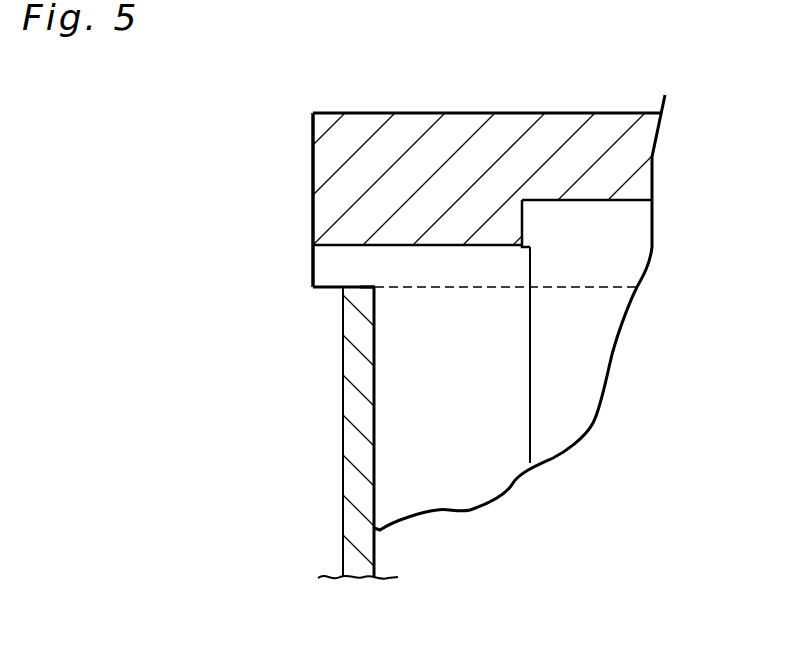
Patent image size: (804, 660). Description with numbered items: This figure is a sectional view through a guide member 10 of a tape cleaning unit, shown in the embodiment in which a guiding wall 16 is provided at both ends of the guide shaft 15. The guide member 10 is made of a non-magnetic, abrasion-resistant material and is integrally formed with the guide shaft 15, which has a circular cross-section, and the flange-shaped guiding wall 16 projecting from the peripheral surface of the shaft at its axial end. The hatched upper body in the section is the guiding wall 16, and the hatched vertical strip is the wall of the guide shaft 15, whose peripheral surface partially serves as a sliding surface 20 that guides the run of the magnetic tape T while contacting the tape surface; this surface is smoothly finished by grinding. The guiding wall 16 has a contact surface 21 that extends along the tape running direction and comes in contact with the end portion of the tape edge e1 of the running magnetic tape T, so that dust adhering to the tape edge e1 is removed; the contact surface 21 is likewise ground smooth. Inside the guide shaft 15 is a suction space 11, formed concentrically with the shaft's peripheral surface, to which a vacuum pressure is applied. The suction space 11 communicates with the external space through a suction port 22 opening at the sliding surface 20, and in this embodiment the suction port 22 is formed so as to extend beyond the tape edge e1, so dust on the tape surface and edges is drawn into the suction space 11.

The guide member 10 is at (457, 309).
The suction space 11 is at (569, 383).
The guide shaft portion 15 is at (333, 433).
The guiding wall 16 is at (360, 127).
The sliding surface 20 is at (372, 465).
The contact surface 21 is at (328, 288).
The suction port 22 is at (402, 380).
The tape edge e1 is at (362, 275).
The magnetic tape T is at (342, 422).